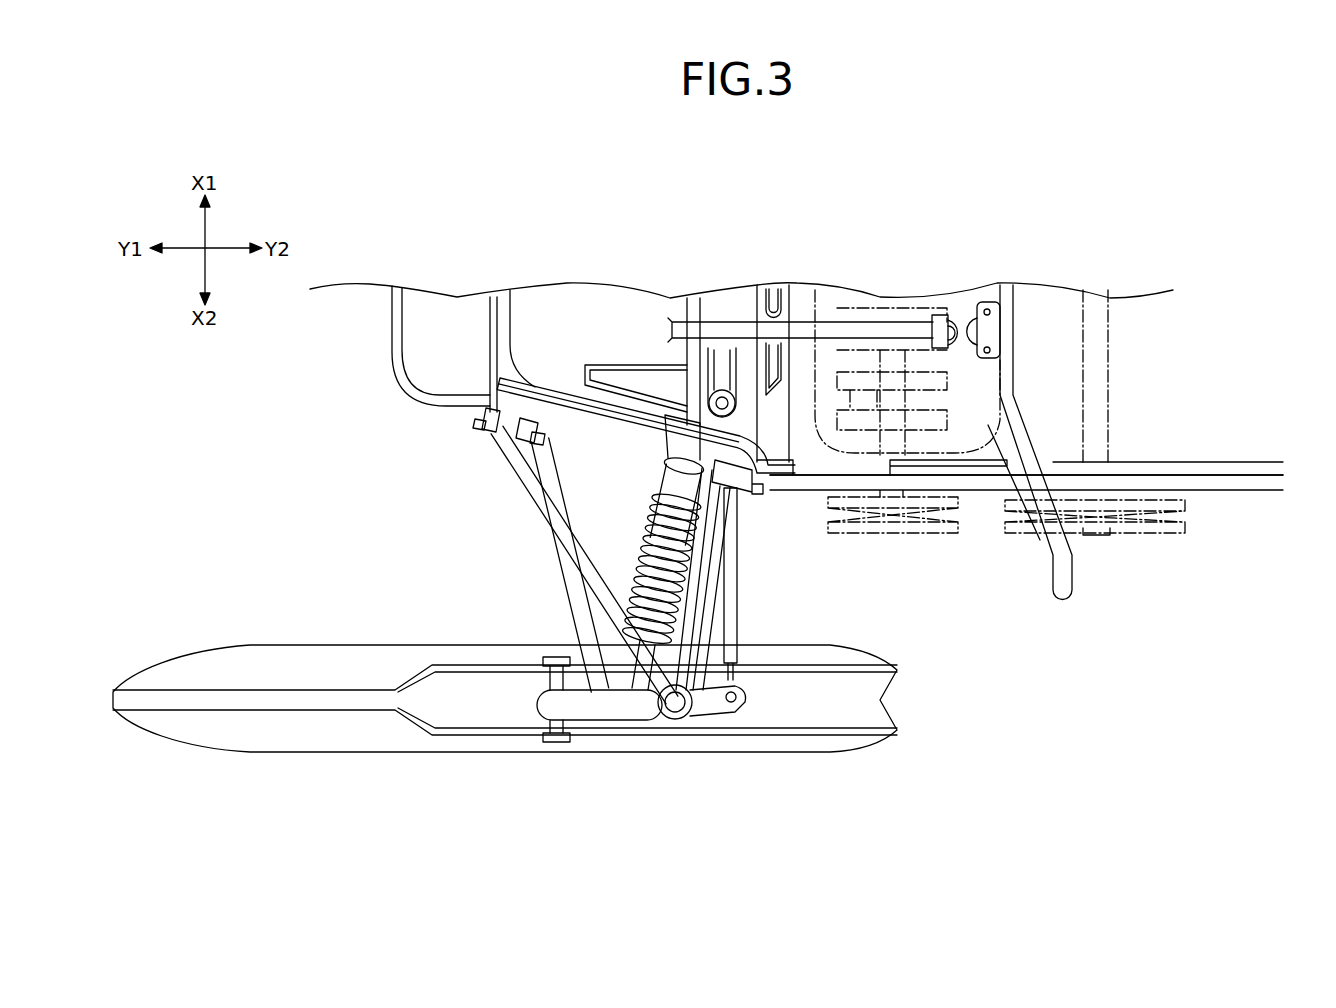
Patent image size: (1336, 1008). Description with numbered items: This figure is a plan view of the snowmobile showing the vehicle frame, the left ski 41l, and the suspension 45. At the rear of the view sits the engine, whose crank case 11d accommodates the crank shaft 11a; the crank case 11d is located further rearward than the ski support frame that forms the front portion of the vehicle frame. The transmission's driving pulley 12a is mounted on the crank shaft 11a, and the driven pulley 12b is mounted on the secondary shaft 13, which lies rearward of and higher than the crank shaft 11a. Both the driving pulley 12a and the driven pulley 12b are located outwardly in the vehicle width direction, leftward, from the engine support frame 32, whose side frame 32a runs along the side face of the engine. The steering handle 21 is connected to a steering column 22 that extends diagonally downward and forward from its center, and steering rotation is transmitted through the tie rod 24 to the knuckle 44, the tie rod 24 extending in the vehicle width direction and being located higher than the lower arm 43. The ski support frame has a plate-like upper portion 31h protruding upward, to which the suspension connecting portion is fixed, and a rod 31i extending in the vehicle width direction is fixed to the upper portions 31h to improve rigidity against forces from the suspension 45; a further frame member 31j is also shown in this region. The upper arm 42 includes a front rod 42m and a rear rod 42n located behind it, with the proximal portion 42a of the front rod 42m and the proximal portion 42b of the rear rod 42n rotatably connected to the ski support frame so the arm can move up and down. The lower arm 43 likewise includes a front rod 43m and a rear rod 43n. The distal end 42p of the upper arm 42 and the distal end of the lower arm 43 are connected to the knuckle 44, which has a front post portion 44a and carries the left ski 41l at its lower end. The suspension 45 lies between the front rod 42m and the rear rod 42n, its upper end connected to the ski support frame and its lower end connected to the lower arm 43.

The crank shaft 11a is at (895, 308).
The crank case 11d is at (812, 325).
The driving pulley 12a is at (945, 532).
The driven pulley 12b is at (1160, 533).
The secondary shaft 13 is at (1110, 358).
The steering handle 21 is at (1012, 355).
The steering column 22 is at (736, 330).
The tie rod 24 is at (735, 600).
The upper portion 31h is at (557, 395).
The rod 31i is at (688, 352).
The frame member 31j is at (490, 338).
The engine support frame 32 is at (1220, 492).
The side frame 32a is at (1268, 492).
The left ski 41l is at (282, 645).
The upper arm 42 is at (562, 565).
The proximal portion 42a is at (485, 425).
The proximal portion 42b is at (740, 500).
The front rod 42m is at (541, 515).
The rear rod 42n is at (697, 553).
The distal end 42p is at (680, 714).
The lower arm 43 is at (567, 585).
The front rod 43m is at (547, 455).
The rear rod 43n is at (720, 568).
The knuckle 44 is at (616, 739).
The front post portion 44a is at (580, 728).
The suspension 45 is at (645, 522).